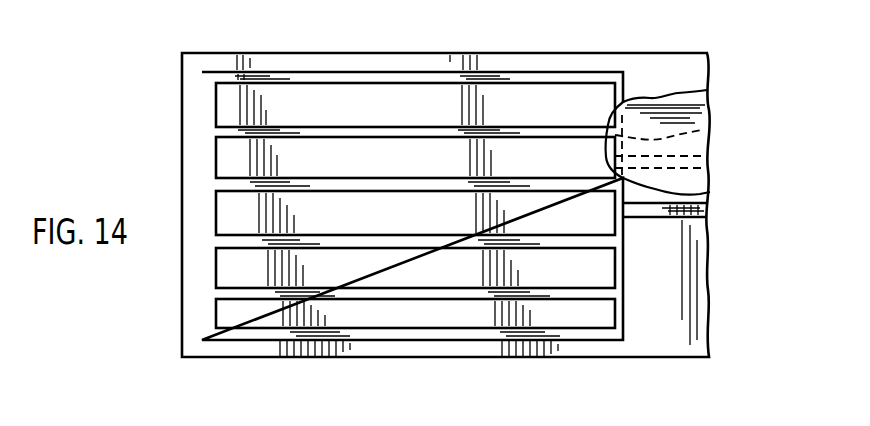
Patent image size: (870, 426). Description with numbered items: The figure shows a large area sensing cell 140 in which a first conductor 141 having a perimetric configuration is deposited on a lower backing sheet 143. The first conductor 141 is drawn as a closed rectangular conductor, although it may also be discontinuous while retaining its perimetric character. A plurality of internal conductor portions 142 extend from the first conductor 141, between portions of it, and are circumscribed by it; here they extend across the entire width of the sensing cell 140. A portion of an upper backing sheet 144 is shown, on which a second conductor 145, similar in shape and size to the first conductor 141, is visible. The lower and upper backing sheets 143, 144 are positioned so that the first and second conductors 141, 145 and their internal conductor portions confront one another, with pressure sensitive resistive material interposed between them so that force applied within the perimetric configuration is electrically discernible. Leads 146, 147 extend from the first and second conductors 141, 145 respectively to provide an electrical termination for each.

The large area sensing cell 140 is at (320, 25).
The first conductor 141 is at (266, 333).
The internal conductor portions 142 is at (232, 240).
The lower backing sheet 143 is at (678, 323).
The upper backing sheet 144 is at (680, 120).
The second conductor 145 is at (677, 138).
The lead 146 is at (726, 219).
The lead 147 is at (692, 160).